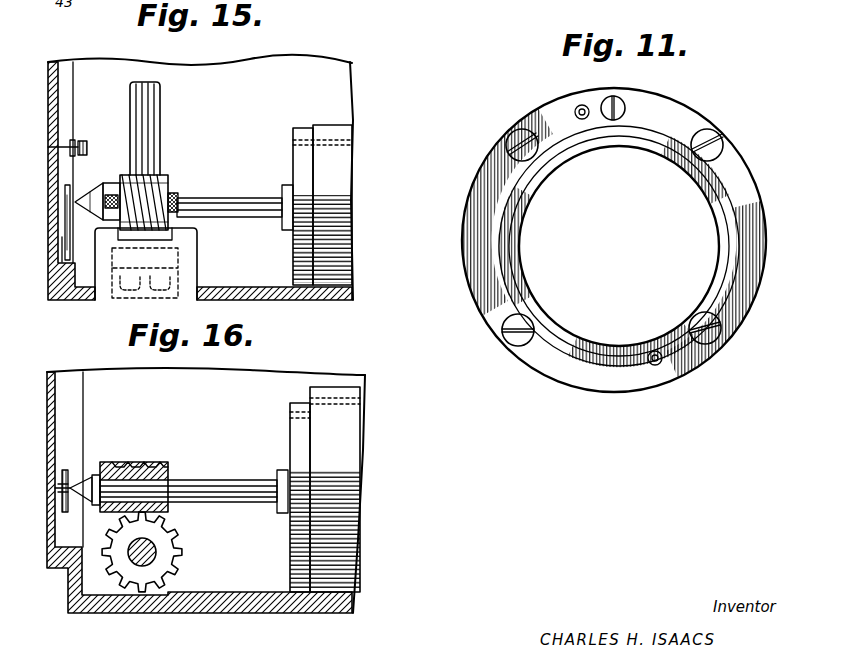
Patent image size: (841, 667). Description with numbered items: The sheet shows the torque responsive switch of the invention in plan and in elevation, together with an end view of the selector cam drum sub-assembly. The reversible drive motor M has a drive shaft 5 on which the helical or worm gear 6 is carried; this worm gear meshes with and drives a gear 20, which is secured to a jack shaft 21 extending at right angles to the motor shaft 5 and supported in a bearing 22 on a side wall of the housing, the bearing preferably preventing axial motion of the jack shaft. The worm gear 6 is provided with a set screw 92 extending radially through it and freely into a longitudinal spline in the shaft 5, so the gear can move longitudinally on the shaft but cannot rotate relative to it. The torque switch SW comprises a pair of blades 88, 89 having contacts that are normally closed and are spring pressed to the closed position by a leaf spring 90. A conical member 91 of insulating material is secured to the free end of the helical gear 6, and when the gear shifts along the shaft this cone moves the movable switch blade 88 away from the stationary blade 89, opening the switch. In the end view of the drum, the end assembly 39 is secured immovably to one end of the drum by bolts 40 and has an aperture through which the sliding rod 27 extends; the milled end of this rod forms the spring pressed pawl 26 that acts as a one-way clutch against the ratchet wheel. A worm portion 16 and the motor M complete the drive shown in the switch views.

In FIG. 15, the drive shaft 5 is at (262, 182).
In FIG. 16, the drive shaft 5 is at (253, 455).
In FIG. 16, the helical or worm gear 6 is at (164, 470).
In FIG. 15, the worm 16 is at (163, 188).
In FIG. 15, the gear 20 is at (178, 205).
In FIG. 16, the gear 20 is at (165, 560).
In FIG. 15, the jack shaft 21 is at (160, 128).
In FIG. 16, the jack shaft 21 is at (155, 549).
In FIG. 15, the bearing 22 is at (176, 262).
In FIG. 11, the spring pressed pawl 26 is at (605, 103).
In FIG. 11, the sliding rod 27 is at (622, 110).
In FIG. 11, the end assembly 39 is at (727, 303).
In FIG. 11, the bolts 40 is at (508, 150).
In FIG. 15, the movable switch blade 88 is at (75, 203).
In FIG. 15, the stationary switch blade 89 is at (87, 147).
In FIG. 16, the stationary switch blade 89 is at (72, 482).
In FIG. 15, the leaf spring 90 is at (62, 237).
In FIG. 15, the conical member 91 is at (89, 217).
In FIG. 16, the conical member 91 is at (100, 476).
In FIG. 16, the set screw 92 is at (106, 478).
In FIG. 15, the reversible drive motor M is at (340, 202).
In FIG. 16, the reversible drive motor M is at (343, 465).
In FIG. 15, the switch SW is at (49, 149).